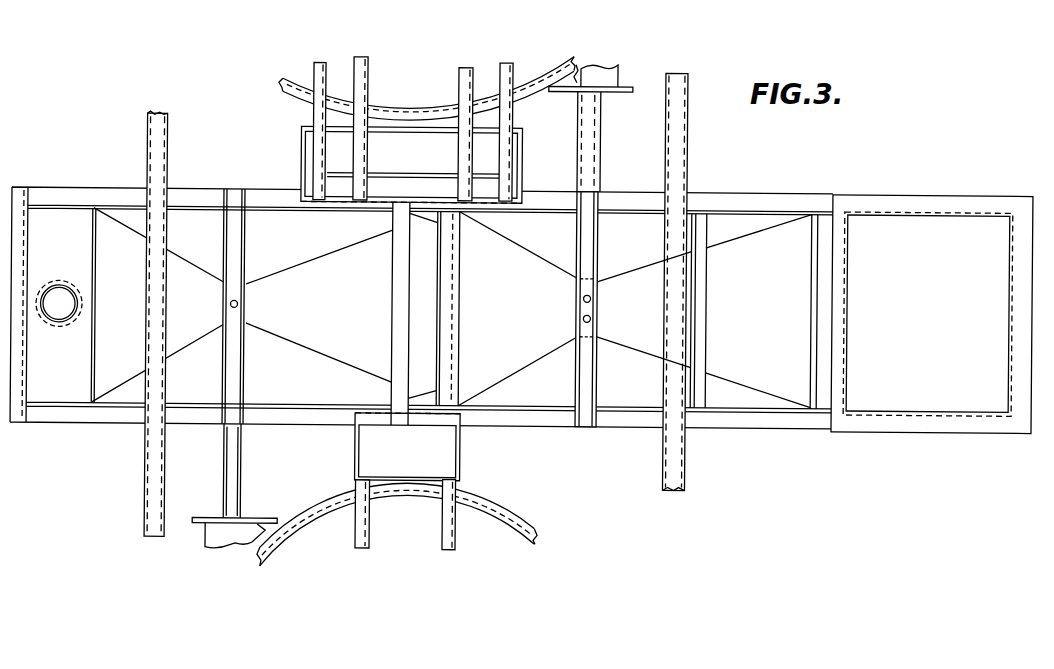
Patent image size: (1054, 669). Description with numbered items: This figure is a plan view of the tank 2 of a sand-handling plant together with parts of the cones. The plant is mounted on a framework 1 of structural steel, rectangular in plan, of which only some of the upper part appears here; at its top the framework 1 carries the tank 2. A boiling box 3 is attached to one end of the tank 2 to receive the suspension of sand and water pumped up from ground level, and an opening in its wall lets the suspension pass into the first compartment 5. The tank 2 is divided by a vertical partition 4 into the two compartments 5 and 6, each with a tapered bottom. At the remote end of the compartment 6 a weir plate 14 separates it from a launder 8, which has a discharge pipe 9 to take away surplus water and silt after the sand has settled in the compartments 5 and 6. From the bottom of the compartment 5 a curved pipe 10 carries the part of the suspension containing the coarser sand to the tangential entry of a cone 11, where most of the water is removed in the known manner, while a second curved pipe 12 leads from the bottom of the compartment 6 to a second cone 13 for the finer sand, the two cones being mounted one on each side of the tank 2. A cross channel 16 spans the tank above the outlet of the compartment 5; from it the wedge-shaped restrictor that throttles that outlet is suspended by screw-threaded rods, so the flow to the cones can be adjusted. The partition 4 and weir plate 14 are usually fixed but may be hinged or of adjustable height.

The framework 1 is at (168, 140).
The tank 2 is at (467, 378).
The boiling box 3 is at (926, 302).
The vertical partition 4 is at (460, 288).
The first compartment 5 is at (748, 309).
The second compartment 6 is at (344, 314).
The launder 8 is at (65, 218).
The discharge pipe 9 is at (67, 313).
The curved pipe 10 is at (600, 125).
The cone 11 is at (417, 108).
The curved pipe 12 is at (243, 451).
The second cone 13 is at (312, 502).
The weir plate 14 is at (95, 375).
The cross channel 16 is at (587, 412).